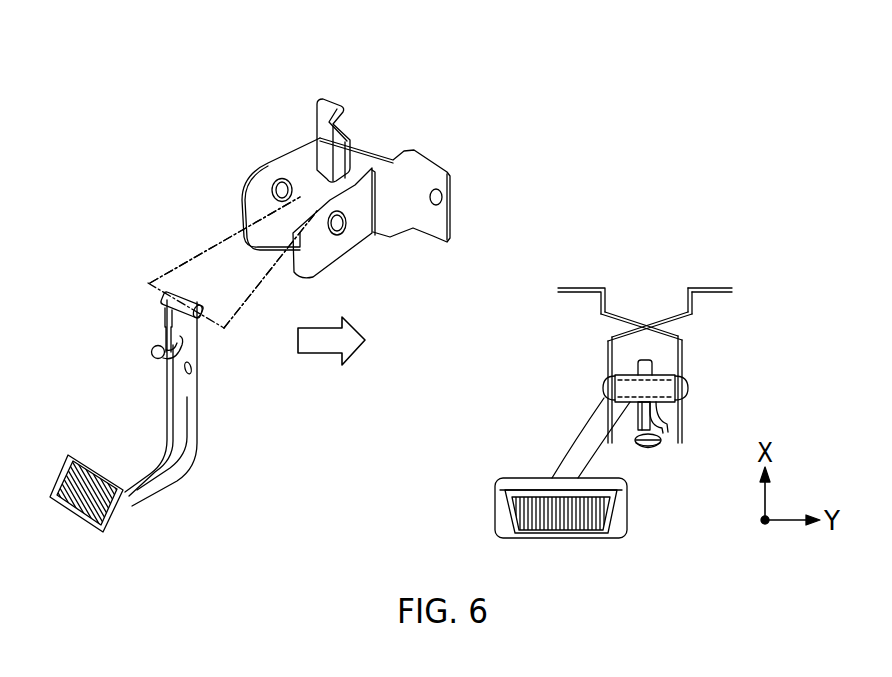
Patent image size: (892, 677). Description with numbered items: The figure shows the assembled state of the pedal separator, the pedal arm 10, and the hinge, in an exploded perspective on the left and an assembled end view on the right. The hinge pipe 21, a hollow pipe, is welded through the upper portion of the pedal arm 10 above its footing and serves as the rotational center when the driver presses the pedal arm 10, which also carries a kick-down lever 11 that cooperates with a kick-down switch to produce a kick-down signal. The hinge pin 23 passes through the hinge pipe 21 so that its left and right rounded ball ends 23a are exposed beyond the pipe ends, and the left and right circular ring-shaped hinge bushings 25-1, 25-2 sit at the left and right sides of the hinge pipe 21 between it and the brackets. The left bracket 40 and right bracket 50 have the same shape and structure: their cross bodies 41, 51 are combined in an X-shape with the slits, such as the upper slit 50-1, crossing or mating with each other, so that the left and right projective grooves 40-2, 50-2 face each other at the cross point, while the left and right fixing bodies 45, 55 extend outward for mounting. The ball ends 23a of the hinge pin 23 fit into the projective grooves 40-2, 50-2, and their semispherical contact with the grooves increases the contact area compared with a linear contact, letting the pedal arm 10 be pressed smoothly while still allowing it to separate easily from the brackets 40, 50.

The pedal arm 10 is at (183, 430).
The kick-down lever 11 is at (156, 353).
The hinge pipe 21 is at (165, 299).
The hinge pin 23 is at (634, 381).
The ball ends 23a is at (604, 392).
The left hinge bushing 25-1 is at (167, 274).
The right hinge bushing 25-2 is at (197, 297).
The left bracket 40 is at (330, 107).
The left projective groove 40-2 is at (334, 220).
The left cross body 41 is at (616, 319).
The left fixing body 45 is at (585, 288).
The right bracket 50 is at (433, 177).
The upper slit 50-1 is at (646, 320).
The right projective groove 50-2 is at (290, 193).
The right cross body 51 is at (680, 320).
The right fixing body 55 is at (714, 288).